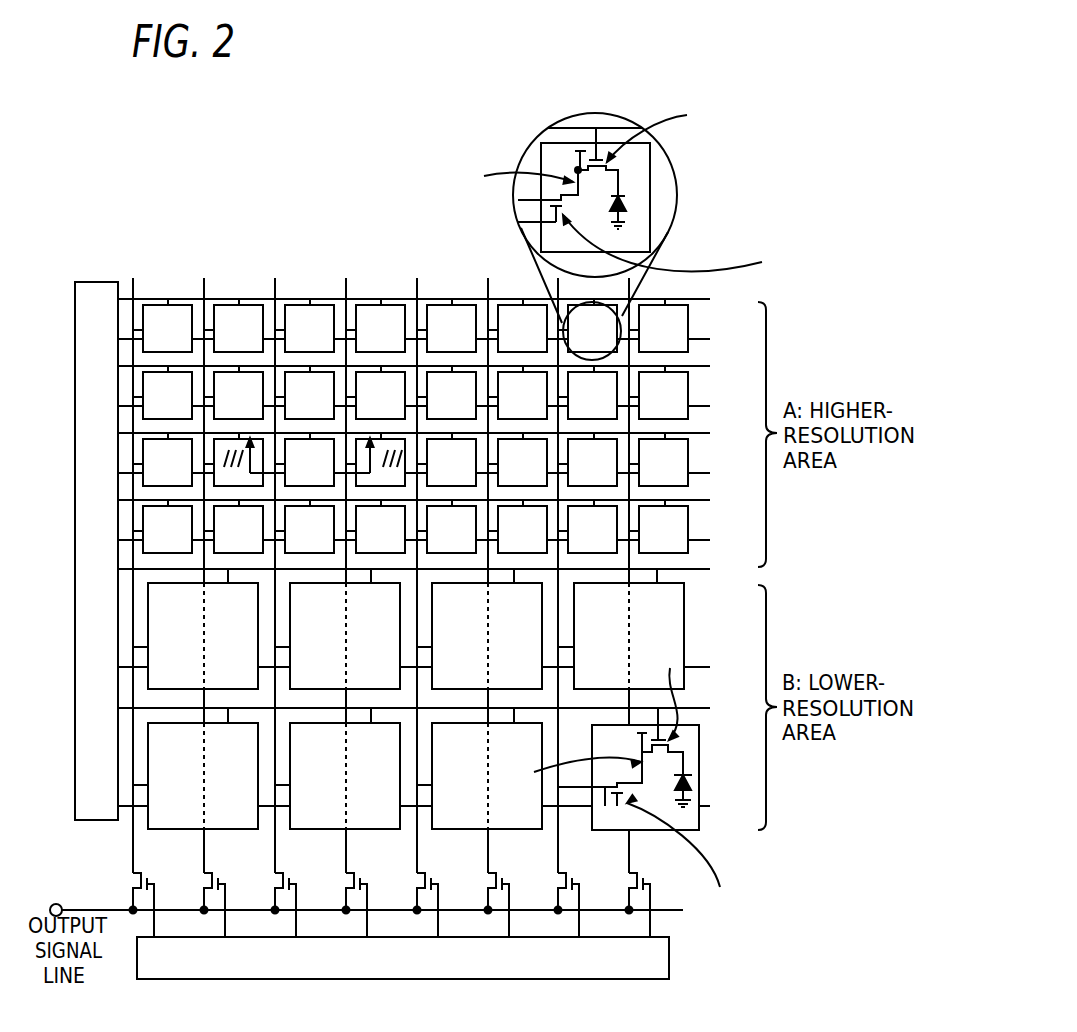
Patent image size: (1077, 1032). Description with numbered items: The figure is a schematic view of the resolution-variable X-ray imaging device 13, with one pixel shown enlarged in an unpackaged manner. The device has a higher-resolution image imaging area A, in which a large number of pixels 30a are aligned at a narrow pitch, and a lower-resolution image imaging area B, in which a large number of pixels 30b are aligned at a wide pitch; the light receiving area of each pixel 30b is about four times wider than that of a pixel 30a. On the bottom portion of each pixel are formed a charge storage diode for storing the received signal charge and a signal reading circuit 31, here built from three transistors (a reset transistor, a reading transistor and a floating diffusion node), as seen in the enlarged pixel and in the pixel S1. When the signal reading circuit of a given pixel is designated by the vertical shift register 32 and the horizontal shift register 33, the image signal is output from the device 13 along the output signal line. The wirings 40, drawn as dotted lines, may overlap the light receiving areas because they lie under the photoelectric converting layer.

The X-ray imaging device 13 is at (152, 253).
The pixel 30a is at (375, 320).
The pixel 30b is at (172, 817).
The signal reading circuit 31 is at (666, 225).
The vertical shift register 32 is at (99, 282).
The horizontal shift register 33 is at (669, 958).
The wiring 40 is at (346, 632).
The pixel with signal S1 is at (687, 779).